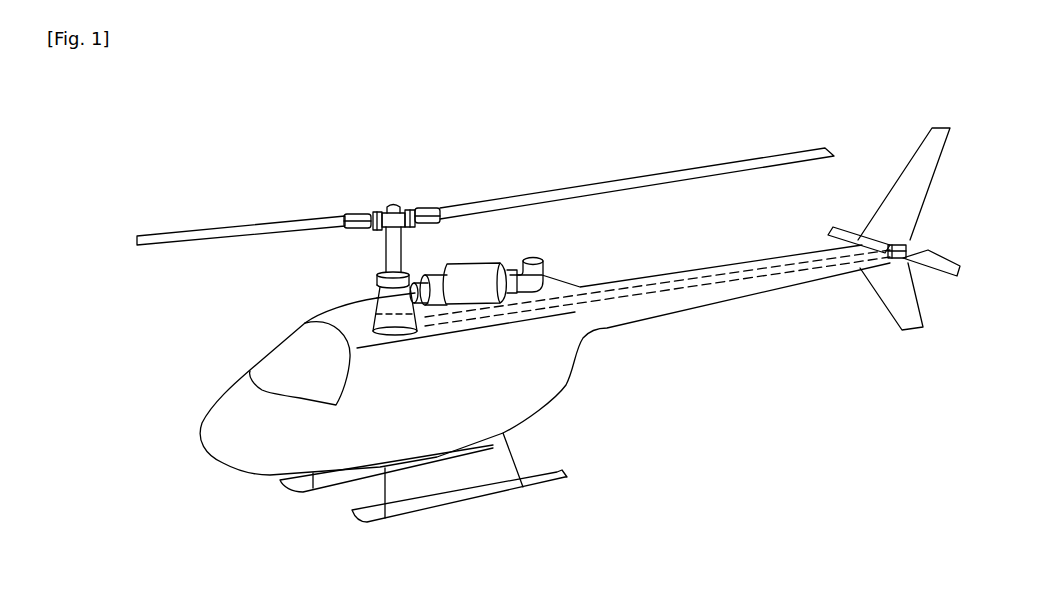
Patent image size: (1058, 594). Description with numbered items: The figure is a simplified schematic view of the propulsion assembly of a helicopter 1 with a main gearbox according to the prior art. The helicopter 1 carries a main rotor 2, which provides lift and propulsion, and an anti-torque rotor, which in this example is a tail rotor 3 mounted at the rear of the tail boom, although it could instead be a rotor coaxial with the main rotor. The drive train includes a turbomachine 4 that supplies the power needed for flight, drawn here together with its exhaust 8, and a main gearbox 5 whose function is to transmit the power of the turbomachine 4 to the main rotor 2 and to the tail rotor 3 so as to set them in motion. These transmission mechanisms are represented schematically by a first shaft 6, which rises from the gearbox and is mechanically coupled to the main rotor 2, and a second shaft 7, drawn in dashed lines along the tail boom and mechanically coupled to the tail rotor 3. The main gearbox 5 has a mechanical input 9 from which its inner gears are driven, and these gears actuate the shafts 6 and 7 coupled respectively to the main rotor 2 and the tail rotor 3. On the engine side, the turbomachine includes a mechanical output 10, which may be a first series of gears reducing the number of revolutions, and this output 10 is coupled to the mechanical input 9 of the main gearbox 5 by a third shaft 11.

The helicopter 1 is at (651, 380).
The main rotor 2 is at (395, 206).
The tail rotor 3 is at (845, 228).
The turbomachine 4 is at (476, 274).
The main gearbox 5 is at (393, 308).
The first shaft 6 is at (386, 248).
The second shaft 7 is at (662, 290).
The exhaust 8 is at (532, 258).
The mechanical input 9 is at (403, 293).
The mechanical output 10 is at (440, 276).
The third shaft 11 is at (426, 304).